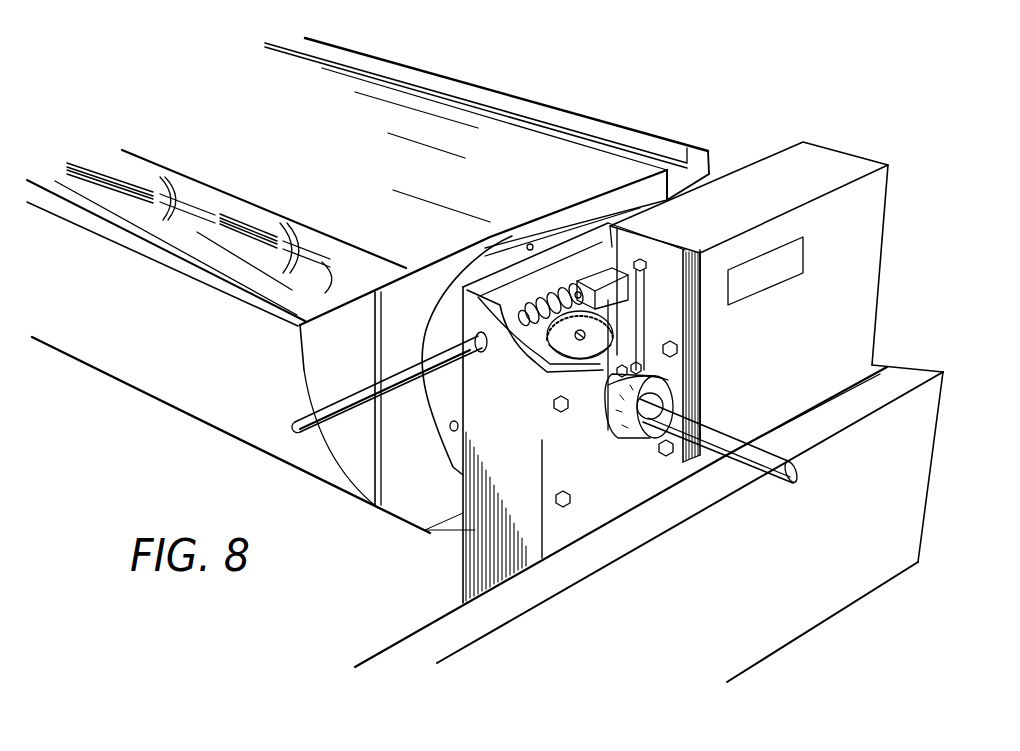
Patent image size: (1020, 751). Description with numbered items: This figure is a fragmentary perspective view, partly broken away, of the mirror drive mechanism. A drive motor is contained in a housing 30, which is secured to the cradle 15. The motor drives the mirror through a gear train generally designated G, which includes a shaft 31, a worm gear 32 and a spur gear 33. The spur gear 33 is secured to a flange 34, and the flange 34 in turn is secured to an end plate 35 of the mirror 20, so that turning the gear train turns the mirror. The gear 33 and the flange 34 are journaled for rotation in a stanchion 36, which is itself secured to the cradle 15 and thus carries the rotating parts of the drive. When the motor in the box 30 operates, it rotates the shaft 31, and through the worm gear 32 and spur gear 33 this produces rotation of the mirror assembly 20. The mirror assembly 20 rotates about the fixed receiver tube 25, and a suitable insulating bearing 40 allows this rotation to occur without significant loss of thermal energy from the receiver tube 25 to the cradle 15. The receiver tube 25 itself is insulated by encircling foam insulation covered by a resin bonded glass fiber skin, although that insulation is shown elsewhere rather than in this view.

The cradle 15 is at (906, 368).
The mirror 20 is at (527, 100).
The receiver tube 25 is at (770, 467).
The housing 30 is at (821, 157).
The shaft 31 is at (303, 432).
The worm gear 32 is at (562, 285).
The spur gear 33 is at (588, 282).
The flange 34 is at (442, 427).
The end plate 35 is at (425, 275).
The stanchion 36 is at (463, 540).
The insulating bearing 40 is at (622, 440).
The gear train G is at (650, 292).